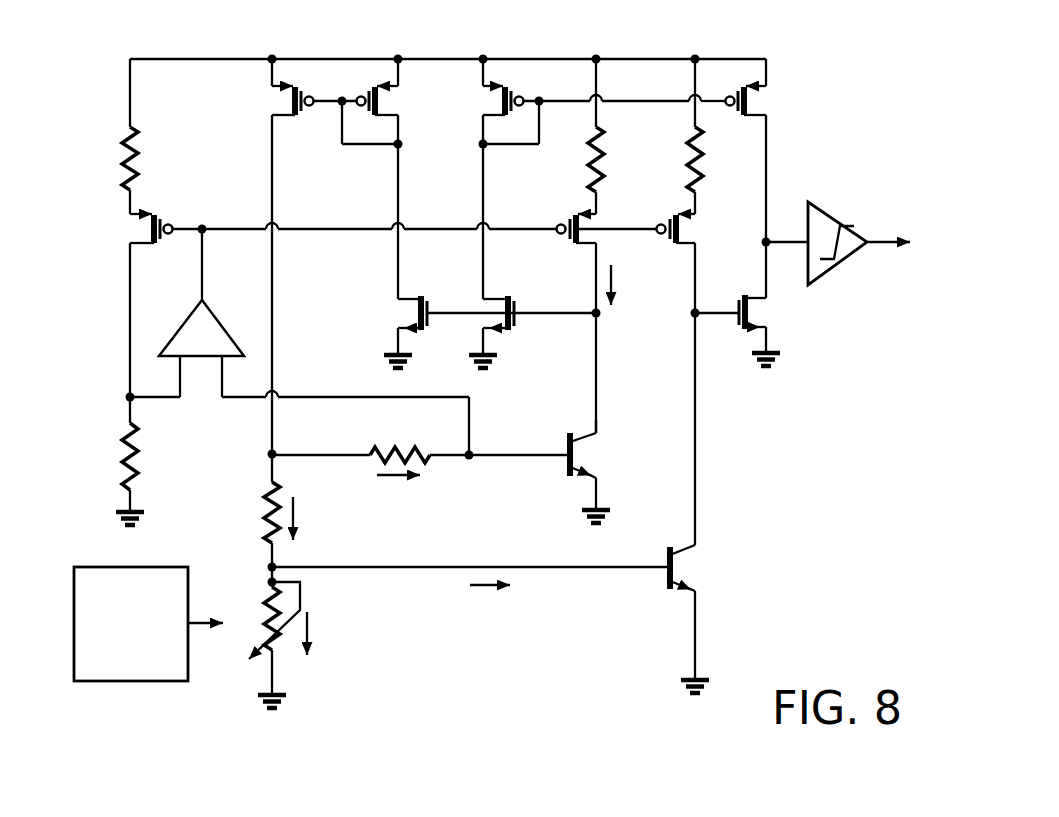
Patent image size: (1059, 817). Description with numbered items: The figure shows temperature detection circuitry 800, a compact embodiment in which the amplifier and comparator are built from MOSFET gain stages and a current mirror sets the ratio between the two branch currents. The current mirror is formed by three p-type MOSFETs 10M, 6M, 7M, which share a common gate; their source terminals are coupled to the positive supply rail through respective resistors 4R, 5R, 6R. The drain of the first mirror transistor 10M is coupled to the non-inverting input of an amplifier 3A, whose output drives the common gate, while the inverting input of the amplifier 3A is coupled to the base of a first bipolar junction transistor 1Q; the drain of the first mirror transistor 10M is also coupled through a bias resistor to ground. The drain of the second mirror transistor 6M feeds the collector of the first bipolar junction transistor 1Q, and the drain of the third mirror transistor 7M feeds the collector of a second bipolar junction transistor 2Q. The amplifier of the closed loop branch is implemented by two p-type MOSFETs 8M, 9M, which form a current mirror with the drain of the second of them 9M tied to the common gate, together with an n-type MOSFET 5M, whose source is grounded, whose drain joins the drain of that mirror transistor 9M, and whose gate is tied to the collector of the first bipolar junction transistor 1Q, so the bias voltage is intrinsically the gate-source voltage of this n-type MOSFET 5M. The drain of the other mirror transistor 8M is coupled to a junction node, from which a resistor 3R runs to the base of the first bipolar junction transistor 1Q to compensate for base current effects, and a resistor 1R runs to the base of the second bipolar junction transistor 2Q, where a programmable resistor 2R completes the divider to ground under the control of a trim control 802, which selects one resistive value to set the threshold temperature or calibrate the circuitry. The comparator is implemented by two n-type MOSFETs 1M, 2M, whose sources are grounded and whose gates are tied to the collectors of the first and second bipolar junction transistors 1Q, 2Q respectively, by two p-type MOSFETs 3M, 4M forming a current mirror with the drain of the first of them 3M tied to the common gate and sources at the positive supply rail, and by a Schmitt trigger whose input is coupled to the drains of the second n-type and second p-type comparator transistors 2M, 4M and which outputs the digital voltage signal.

The temperature detection circuitry 800 is at (845, 56).
The trim control 802 is at (114, 665).
The n-type MOSFET M1 1M is at (494, 320).
The n-type MOSFET M2 2M is at (745, 330).
The p-type MOSFET M3 3M is at (488, 179).
The p-type MOSFET M4 4M is at (762, 178).
The n-type MOSFET M5 5M is at (397, 332).
The p-type MOSFET M6 6M is at (572, 311).
The p-type MOSFET M7 7M is at (692, 379).
The p-type MOSFET M8 8M is at (276, 256).
The p-type MOSFET M9 9M is at (395, 179).
The p-type MOSFET M10 10M is at (130, 305).
The resistor R1 1R is at (258, 520).
The programmable resistor R2 2R is at (248, 643).
The resistor R3 3R is at (370, 441).
The resistor R4 4R is at (146, 136).
The resistor R5 5R is at (613, 136).
The resistor R6 6R is at (712, 136).
The bipolar junction transistor Q1 1Q is at (599, 471).
The bipolar junction transistor Q2 2Q is at (699, 619).
The amplifier A3 3A is at (187, 348).